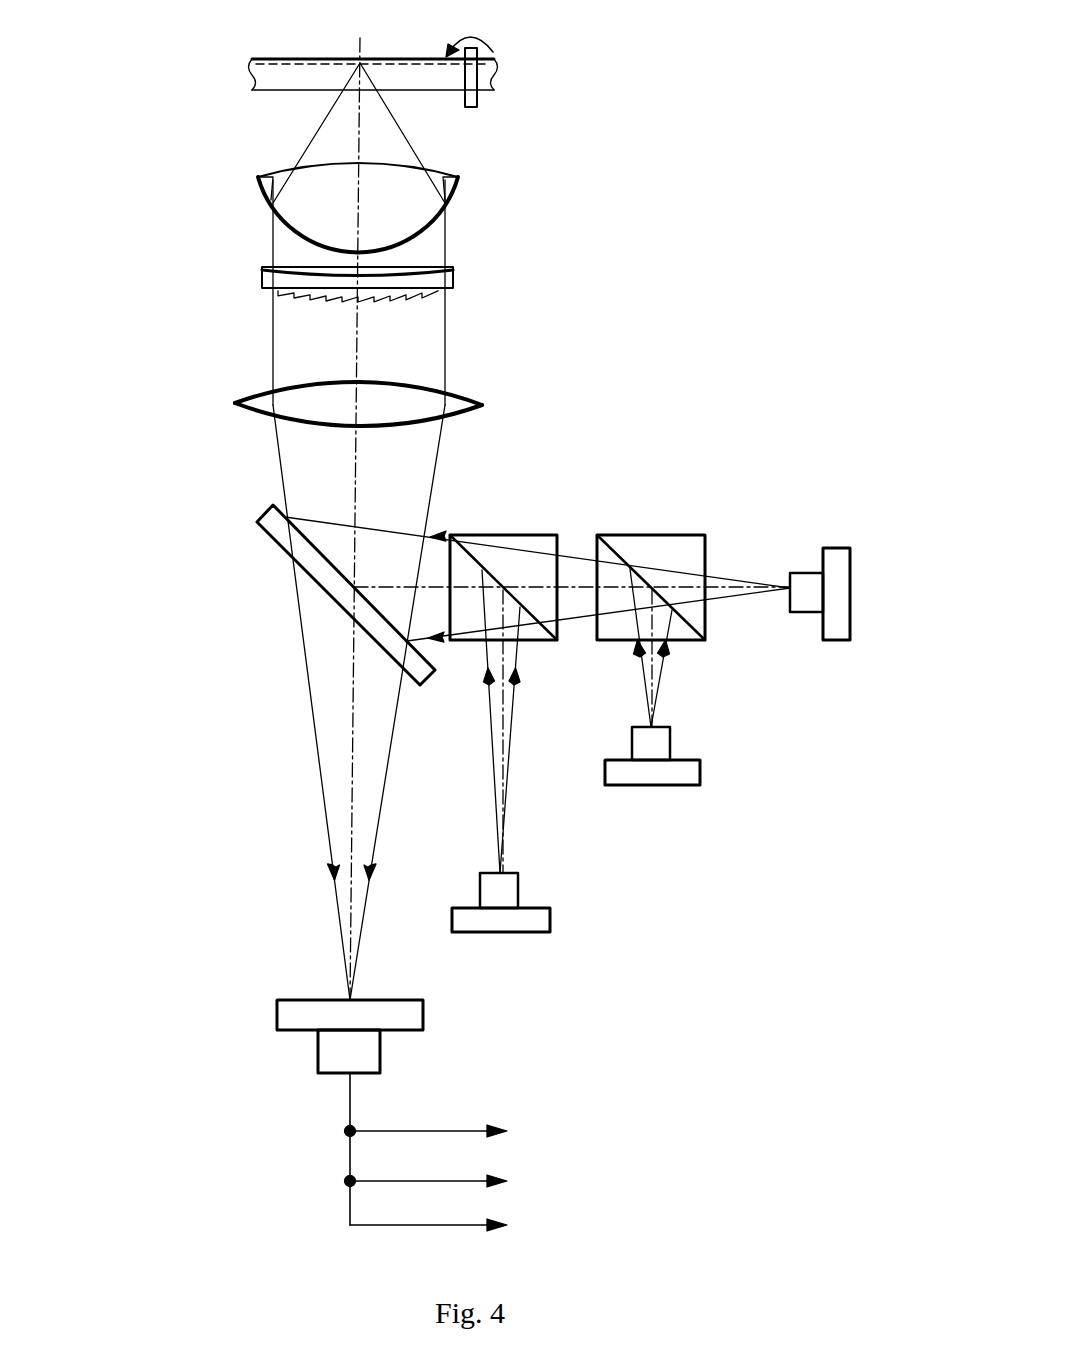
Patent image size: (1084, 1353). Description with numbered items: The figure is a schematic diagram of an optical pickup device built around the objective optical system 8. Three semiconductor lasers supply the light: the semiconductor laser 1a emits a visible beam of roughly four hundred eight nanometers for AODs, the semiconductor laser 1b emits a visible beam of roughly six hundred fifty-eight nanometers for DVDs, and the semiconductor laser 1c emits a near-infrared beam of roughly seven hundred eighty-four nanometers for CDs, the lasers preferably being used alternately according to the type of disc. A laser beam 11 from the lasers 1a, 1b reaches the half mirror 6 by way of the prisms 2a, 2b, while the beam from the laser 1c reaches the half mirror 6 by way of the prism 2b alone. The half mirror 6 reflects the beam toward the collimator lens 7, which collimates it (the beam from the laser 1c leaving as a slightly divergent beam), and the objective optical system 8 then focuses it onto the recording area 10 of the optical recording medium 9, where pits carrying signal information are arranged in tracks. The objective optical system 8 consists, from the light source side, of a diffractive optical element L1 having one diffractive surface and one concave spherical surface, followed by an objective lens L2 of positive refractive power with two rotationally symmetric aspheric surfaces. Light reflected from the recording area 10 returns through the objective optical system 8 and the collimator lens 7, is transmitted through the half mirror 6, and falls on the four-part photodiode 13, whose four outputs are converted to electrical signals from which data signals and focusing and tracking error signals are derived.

The recording area 10 is at (265, 58).
The optical recording medium 9 is at (510, 111).
The objective optical system 8 is at (390, 209).
The objective lens L2 is at (260, 174).
The diffractive optical element L1 is at (333, 261).
The collimator lens 7 is at (486, 404).
The half mirror 6 is at (272, 527).
The laser beam 11 is at (437, 534).
The prism 2b is at (537, 536).
The prism 2a is at (675, 538).
The semiconductor laser 1a is at (803, 573).
The semiconductor laser 1b is at (672, 741).
The semiconductor laser 1c is at (520, 886).
The four-part photodiode 13 is at (424, 1013).